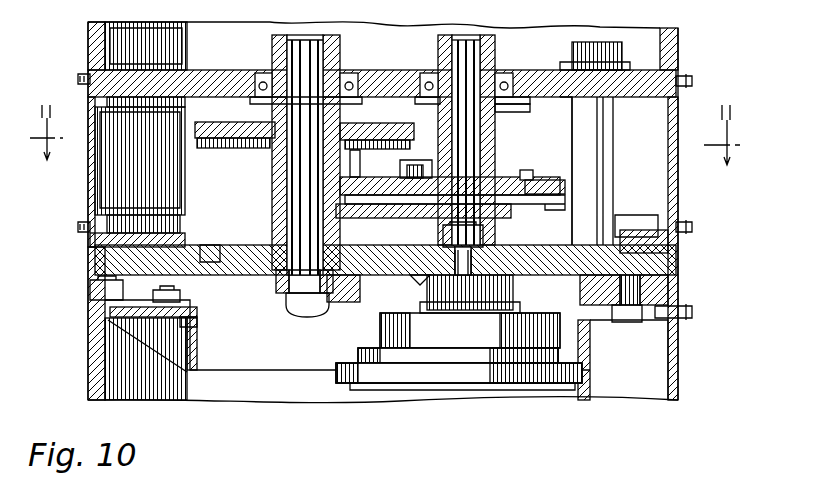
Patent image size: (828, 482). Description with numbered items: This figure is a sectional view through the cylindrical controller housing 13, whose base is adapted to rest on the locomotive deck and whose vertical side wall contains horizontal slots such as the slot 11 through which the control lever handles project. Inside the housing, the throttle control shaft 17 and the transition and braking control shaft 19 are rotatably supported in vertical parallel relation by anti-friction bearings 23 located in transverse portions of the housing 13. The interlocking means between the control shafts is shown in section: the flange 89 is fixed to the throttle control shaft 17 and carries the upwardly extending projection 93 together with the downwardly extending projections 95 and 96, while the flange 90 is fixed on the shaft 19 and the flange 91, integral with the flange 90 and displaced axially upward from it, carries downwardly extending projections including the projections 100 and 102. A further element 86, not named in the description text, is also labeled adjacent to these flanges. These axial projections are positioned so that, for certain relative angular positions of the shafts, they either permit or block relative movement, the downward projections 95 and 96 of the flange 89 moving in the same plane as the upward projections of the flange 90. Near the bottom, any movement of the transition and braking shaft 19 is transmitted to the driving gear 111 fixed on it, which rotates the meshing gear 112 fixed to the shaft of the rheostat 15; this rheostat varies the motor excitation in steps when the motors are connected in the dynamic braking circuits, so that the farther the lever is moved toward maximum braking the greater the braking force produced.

The horizontal slot 11 is at (379, 157).
The controller housing 13 is at (670, 50).
The rheostat 15 is at (403, 332).
The throttle control shaft 17 is at (490, 112).
The transition and braking control shaft 19 is at (328, 108).
The anti-friction bearings 23 is at (427, 88).
The thin plate 86 is at (547, 203).
The flange 89 is at (553, 188).
The flange 90 is at (506, 216).
The flange 91 is at (240, 124).
The projection 93 is at (527, 172).
The projection 95 is at (350, 197).
The projection 96 is at (386, 196).
The projection 100 is at (198, 150).
The projection 102 is at (232, 148).
The driving gear 111 is at (217, 260).
The gear 112 is at (427, 275).